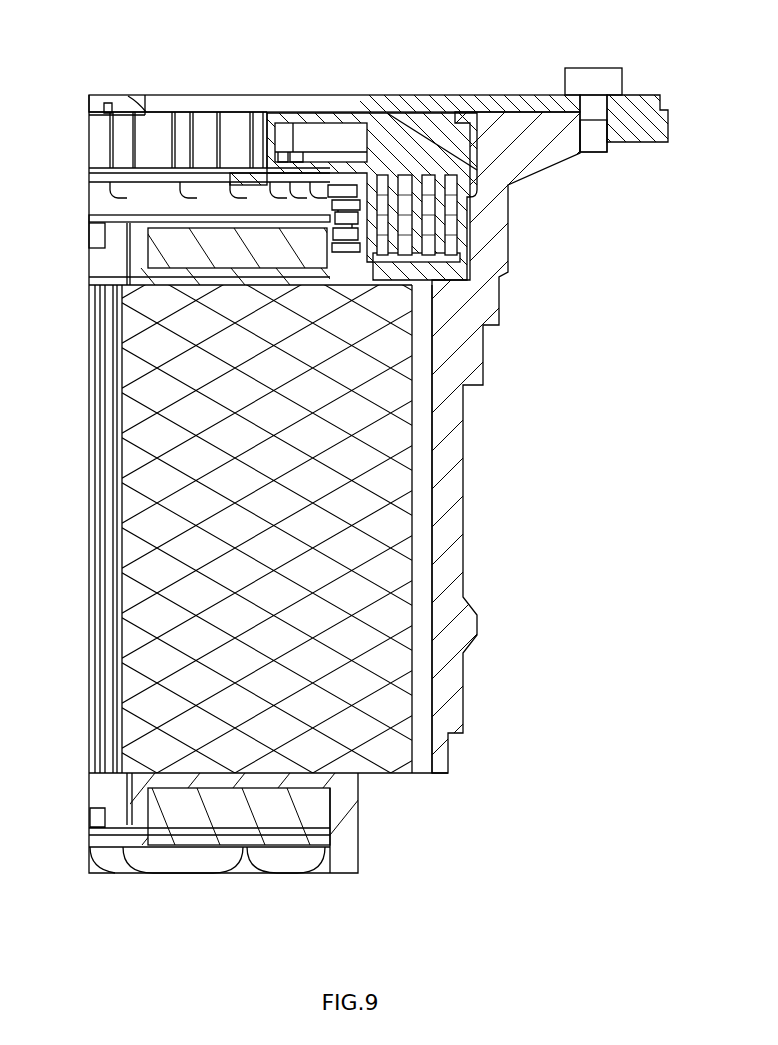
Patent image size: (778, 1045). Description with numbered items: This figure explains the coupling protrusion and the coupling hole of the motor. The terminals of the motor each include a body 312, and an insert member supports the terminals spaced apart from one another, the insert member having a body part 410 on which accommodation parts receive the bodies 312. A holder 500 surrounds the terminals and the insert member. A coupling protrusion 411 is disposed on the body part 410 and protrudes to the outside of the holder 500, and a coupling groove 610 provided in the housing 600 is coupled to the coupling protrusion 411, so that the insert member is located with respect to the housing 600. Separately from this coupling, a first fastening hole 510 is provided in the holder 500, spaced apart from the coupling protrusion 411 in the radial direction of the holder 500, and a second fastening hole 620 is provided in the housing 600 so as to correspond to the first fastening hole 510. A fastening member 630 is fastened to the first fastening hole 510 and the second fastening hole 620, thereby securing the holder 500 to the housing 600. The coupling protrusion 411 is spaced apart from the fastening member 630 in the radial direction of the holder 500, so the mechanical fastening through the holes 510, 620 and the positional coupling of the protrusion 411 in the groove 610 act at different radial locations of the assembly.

The holder 500 is at (423, 133).
The body 312 is at (453, 235).
The coupling groove 610 is at (432, 310).
The fastening member 630 is at (594, 76).
The first fastening hole 510 is at (612, 99).
The second fastening hole 620 is at (606, 143).
The housing 600 is at (655, 127).
The body part 410 is at (335, 245).
The coupling protrusion 411 is at (385, 284).